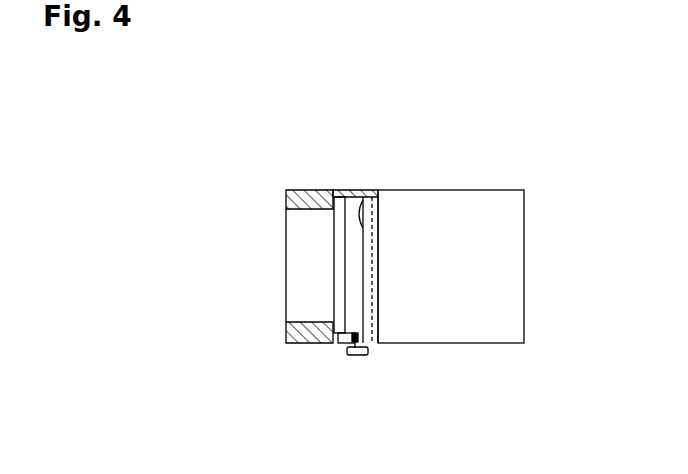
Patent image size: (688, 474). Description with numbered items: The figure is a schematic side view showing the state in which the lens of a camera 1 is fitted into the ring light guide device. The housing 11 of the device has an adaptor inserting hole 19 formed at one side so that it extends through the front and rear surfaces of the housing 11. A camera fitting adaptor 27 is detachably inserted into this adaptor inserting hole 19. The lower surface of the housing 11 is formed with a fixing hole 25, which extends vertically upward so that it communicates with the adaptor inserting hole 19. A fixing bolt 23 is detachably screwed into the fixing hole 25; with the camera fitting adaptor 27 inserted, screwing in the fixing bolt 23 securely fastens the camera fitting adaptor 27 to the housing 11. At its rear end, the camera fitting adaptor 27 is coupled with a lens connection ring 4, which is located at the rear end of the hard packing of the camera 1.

The camera 1 is at (497, 190).
The lens connection ring 4 is at (372, 190).
The housing 11 is at (327, 190).
The adaptor inserting hole 19 is at (300, 308).
The fixing bolt 23 is at (360, 356).
The fixing hole 25 is at (337, 344).
The camera fitting adaptor 27 is at (340, 252).